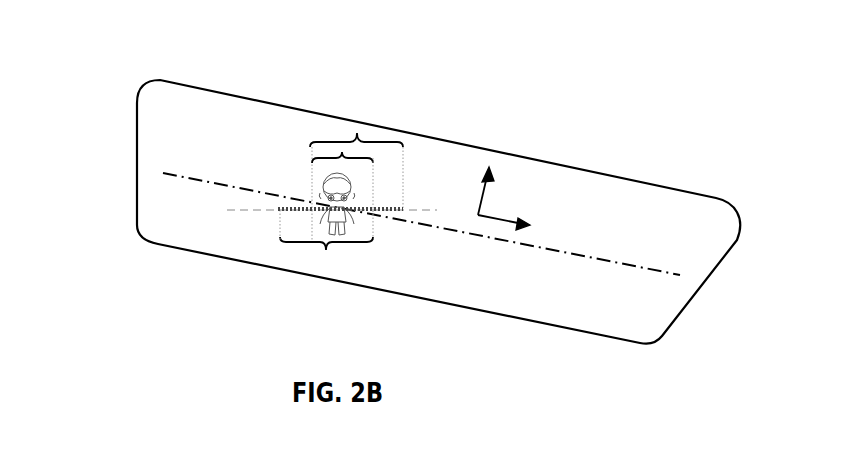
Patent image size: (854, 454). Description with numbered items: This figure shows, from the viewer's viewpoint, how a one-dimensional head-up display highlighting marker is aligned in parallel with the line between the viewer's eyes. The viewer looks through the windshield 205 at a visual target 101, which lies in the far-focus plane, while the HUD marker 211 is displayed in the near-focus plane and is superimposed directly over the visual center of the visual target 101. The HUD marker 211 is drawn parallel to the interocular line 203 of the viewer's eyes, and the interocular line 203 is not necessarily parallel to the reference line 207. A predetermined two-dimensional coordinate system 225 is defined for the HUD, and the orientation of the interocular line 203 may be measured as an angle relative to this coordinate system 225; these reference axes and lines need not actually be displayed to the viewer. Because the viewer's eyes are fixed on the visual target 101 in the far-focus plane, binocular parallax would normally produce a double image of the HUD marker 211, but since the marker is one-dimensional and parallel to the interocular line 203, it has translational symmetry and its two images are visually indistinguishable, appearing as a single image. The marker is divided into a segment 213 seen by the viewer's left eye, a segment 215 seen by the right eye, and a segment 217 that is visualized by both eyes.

The windshield 205 is at (188, 85).
The reference line 207 is at (192, 178).
The interocular line 203 is at (255, 210).
The segment of HUD marker 213 is at (357, 133).
The segment of HUD marker 217 is at (342, 152).
The segment of HUD marker 215 is at (326, 252).
The HUD marker 211 is at (393, 207).
The visual target 101 is at (350, 196).
The predetermined two-dimensional coordinate system 225 is at (500, 218).